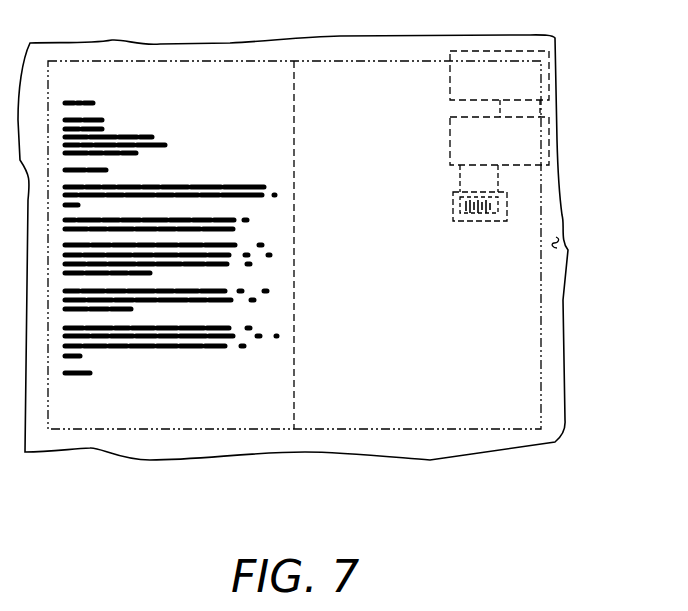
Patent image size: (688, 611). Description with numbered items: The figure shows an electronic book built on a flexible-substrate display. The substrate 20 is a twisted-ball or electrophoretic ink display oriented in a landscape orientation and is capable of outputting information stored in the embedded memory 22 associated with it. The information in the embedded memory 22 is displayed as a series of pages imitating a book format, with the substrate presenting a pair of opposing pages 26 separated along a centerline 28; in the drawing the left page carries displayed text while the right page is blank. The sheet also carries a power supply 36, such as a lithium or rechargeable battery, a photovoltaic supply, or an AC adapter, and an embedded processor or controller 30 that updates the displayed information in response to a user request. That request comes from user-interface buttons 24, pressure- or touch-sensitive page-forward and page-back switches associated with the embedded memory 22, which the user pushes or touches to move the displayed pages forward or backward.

The substrate 20 is at (557, 242).
The embedded memory 22 is at (550, 72).
The user-interface buttons 24 is at (58, 433).
The pages 26 is at (160, 430).
The centerline 28 is at (295, 430).
The embedded processor or controller 30 is at (550, 137).
The power supply 36 is at (508, 210).